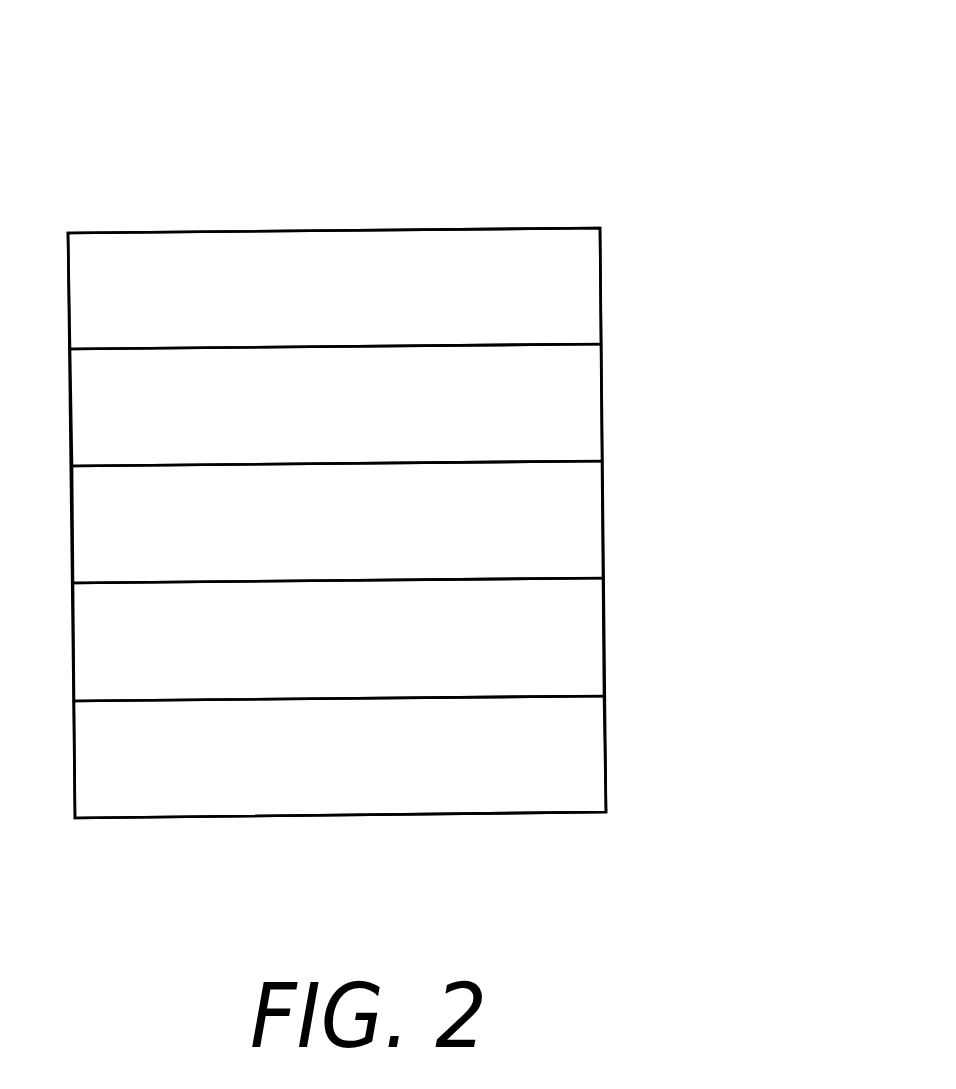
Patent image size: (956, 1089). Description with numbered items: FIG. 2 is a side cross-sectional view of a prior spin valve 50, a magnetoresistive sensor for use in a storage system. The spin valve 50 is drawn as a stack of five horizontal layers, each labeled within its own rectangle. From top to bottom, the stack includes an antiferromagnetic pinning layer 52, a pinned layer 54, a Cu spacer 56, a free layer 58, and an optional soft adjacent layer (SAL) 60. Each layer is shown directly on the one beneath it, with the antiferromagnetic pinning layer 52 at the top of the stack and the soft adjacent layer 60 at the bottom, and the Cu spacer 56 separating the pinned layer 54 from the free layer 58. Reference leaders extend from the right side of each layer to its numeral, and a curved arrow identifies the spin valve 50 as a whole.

The spin valve 50 is at (646, 163).
The antiferromagnetic pinning layer 52 is at (600, 285).
The pinned layer 54 is at (600, 433).
The Cu spacer 56 is at (602, 549).
The free layer 58 is at (603, 666).
The soft adjacent layer (SAL) 60 is at (604, 783).